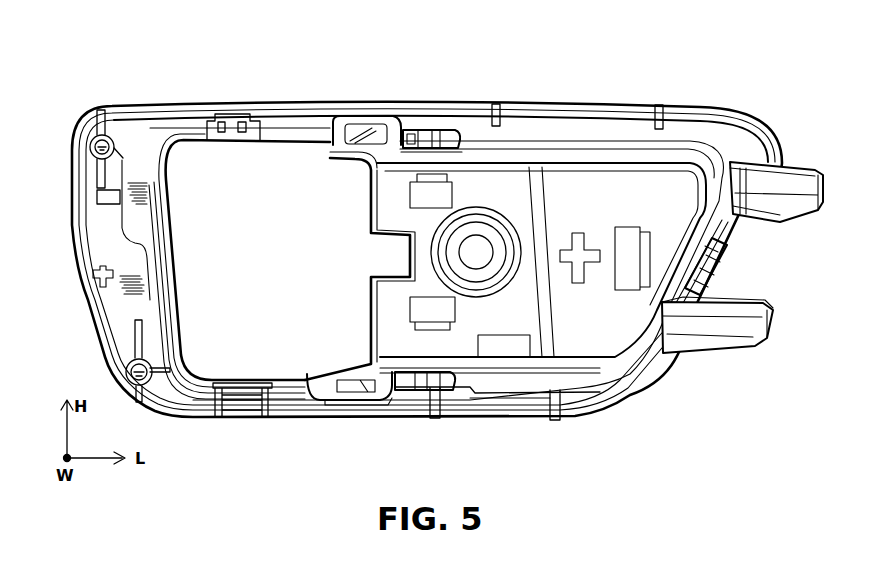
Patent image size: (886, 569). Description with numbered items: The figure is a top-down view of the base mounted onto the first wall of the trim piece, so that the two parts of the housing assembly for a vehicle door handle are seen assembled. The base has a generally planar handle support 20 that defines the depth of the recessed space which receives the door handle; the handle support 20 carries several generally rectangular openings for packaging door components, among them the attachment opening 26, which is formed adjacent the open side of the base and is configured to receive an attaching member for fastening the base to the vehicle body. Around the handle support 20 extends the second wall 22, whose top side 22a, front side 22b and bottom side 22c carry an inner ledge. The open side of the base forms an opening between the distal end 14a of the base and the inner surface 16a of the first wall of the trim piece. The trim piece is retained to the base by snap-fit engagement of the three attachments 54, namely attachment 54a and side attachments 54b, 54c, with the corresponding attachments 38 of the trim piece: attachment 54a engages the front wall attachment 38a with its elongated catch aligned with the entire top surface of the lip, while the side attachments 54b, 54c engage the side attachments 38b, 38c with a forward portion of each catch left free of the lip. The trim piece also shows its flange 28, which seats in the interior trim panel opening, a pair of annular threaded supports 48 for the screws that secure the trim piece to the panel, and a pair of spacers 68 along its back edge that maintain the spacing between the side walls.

The distal end 14a is at (370, 288).
The inner surface 16a is at (173, 258).
The handle support 20 is at (580, 206).
The second wall 22 is at (636, 118).
The top side 22a is at (487, 108).
The front side 22b is at (640, 358).
The bottom side 22c is at (503, 380).
The attachment opening 26 is at (474, 253).
The flange 28 is at (568, 107).
The attachments 38 is at (572, 259).
The front wall attachment 38a is at (713, 244).
The side attachment 38b is at (425, 122).
The side attachment 38c is at (407, 393).
The annular threaded support 48 is at (90, 145).
The attachments 54 is at (559, 219).
The attachment 54a is at (713, 272).
The side attachment 54b is at (452, 145).
The side attachment 54c is at (403, 385).
The spacers 68 is at (228, 118).